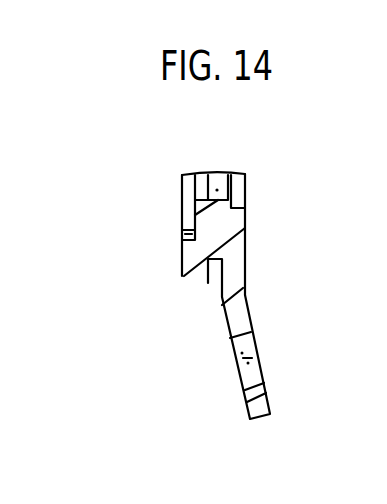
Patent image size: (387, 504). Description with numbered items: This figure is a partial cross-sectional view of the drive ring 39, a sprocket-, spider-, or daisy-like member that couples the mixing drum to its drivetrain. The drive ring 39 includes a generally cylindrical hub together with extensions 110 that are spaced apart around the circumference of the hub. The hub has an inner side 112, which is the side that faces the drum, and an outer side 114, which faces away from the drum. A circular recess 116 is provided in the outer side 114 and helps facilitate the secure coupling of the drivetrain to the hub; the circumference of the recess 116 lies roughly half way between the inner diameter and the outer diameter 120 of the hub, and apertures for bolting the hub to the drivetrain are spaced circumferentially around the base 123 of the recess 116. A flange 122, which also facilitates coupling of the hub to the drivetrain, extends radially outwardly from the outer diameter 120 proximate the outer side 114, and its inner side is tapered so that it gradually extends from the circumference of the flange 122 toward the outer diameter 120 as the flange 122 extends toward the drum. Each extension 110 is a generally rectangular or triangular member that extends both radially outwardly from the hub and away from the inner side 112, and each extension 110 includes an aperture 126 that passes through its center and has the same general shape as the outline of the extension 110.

The drive ring 39 is at (309, 178).
The extension 110 is at (248, 415).
The inner side 112 is at (247, 243).
The outer side 114 is at (183, 258).
The circular recess 116 is at (194, 216).
The outer diameter 120 is at (208, 283).
The flange 122 is at (184, 277).
The base 123 is at (183, 230).
The aperture 126 is at (255, 387).